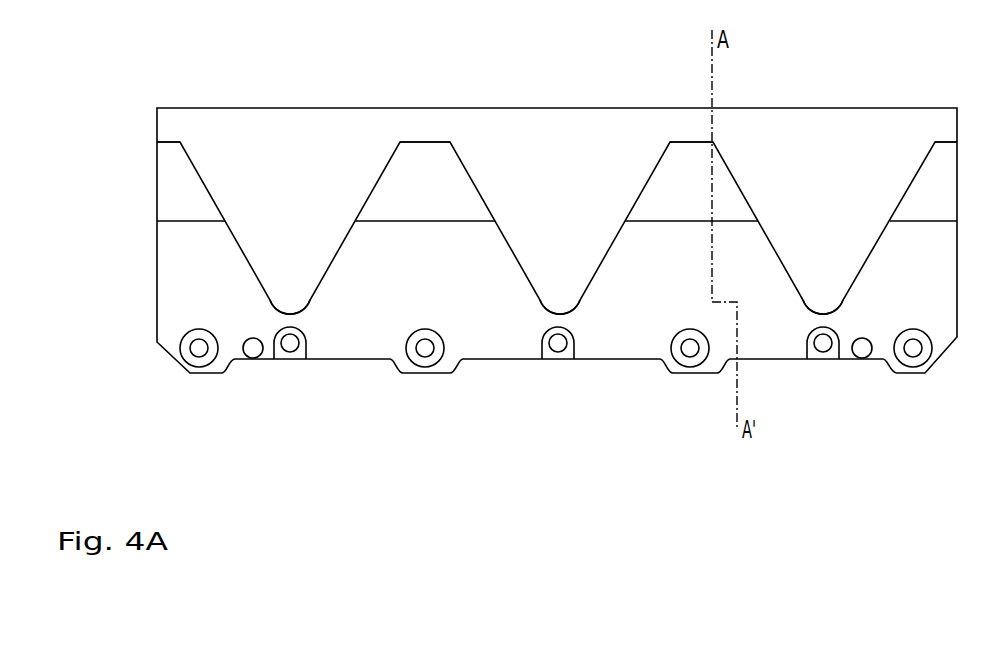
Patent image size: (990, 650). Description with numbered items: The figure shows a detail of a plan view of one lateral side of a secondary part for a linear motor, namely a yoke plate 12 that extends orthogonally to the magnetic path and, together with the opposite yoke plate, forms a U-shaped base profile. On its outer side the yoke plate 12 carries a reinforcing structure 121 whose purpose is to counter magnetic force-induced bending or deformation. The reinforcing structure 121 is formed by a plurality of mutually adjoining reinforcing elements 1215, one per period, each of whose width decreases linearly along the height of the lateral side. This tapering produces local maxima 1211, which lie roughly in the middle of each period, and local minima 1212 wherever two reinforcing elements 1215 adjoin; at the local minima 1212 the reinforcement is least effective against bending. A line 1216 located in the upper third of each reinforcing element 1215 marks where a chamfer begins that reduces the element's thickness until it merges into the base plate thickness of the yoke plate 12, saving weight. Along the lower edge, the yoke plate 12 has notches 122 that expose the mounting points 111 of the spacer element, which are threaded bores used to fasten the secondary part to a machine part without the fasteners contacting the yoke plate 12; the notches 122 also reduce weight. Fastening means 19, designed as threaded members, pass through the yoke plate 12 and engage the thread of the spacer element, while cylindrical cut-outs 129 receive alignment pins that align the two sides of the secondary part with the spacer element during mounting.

The yoke plate 12 is at (817, 89).
The reinforcing structure 121 is at (574, 142).
The local maximum 1211 is at (170, 141).
The local minimum 1212 is at (284, 307).
The reinforcing element 1215 is at (179, 263).
The line 1216 is at (207, 223).
The notch 122 is at (308, 334).
The mounting point 111 is at (290, 361).
The cylindrical cut-out 129 is at (253, 359).
The fastening means 19 is at (198, 370).